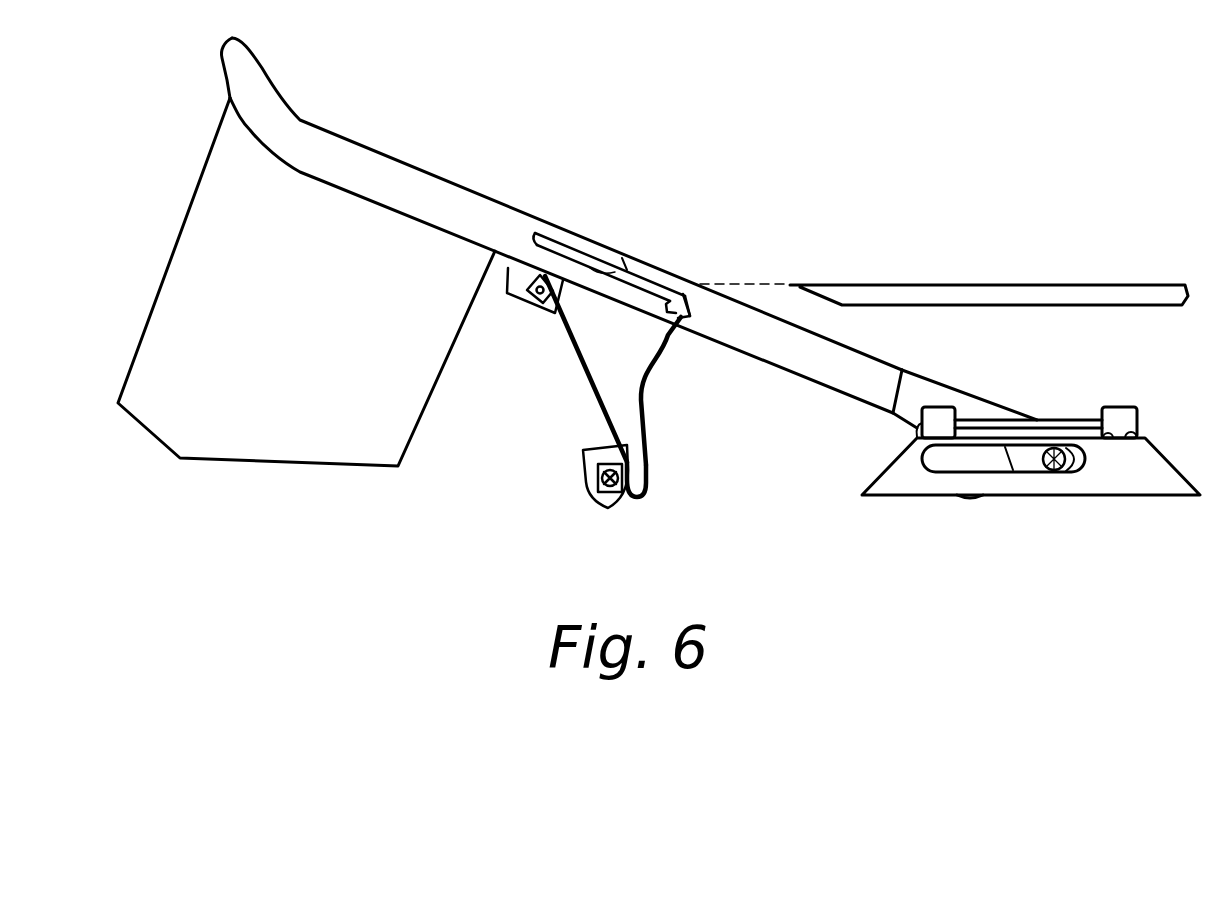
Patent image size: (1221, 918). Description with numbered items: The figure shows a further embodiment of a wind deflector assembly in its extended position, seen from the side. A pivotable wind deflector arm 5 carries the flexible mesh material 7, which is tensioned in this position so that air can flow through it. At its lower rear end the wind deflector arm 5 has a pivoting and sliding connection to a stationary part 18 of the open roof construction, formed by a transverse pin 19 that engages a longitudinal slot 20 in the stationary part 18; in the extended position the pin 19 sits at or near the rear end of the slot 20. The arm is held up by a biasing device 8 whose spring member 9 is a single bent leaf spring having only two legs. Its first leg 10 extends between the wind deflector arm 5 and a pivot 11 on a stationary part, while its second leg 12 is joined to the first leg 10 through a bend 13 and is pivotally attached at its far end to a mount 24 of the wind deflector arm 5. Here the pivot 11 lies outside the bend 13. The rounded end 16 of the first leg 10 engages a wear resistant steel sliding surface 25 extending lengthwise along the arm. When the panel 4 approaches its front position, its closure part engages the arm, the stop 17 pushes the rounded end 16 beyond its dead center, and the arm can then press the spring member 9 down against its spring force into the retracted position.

The panel 4 is at (950, 297).
The wind deflector arm 5 is at (363, 172).
The mesh material 7 is at (257, 437).
The biasing device 8 is at (642, 430).
The spring member 9 is at (624, 430).
The first leg 10 is at (667, 357).
The pivot 11 is at (580, 495).
The second leg 12 is at (587, 377).
The bend 13 is at (643, 495).
The rounded end 16 is at (654, 223).
The stop 17 is at (723, 288).
The stationary part 18 is at (1031, 496).
The transverse pin 19 is at (1050, 470).
The longitudinal slot 20 is at (978, 453).
The mount 24 is at (518, 280).
The wear resistant sliding surface 25 is at (627, 253).